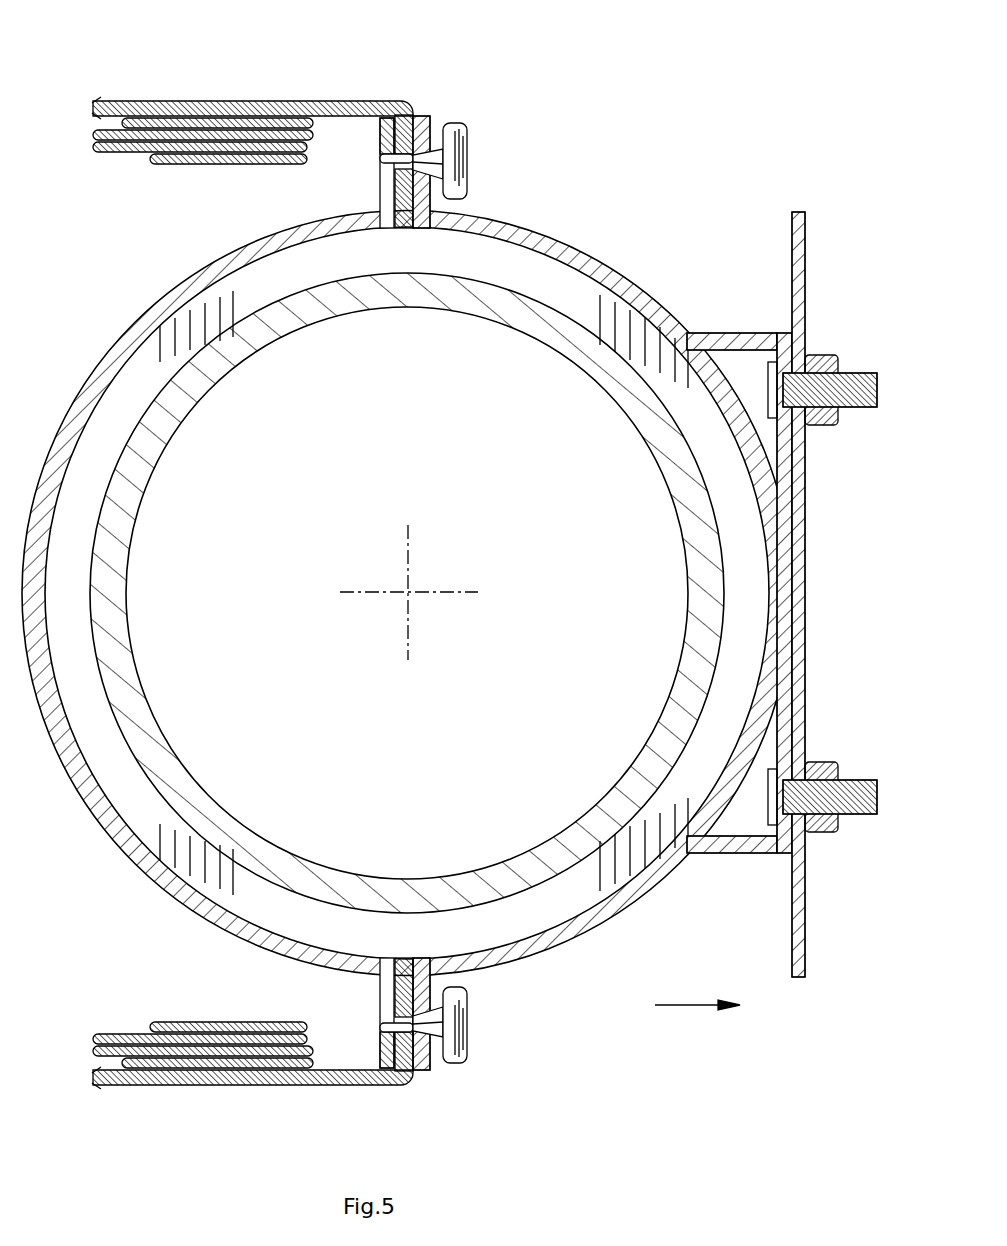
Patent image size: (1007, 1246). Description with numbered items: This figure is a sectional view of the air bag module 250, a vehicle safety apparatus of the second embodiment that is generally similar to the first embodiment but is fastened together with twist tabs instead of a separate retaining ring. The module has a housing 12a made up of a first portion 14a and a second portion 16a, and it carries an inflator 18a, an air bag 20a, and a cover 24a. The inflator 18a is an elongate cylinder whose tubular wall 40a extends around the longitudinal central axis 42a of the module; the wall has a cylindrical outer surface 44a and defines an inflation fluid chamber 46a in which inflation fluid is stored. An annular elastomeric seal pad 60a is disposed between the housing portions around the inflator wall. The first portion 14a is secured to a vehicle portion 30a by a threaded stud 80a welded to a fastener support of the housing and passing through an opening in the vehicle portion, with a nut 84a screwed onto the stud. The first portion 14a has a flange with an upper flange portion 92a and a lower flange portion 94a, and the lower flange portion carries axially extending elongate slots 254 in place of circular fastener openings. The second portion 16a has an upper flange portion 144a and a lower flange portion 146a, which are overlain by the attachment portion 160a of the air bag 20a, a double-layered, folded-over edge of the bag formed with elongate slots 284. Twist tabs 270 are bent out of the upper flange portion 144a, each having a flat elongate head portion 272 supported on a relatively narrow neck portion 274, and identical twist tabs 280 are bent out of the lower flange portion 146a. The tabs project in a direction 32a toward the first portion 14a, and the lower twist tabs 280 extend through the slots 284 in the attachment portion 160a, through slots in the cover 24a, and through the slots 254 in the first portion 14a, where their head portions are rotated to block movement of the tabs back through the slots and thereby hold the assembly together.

The housing 12a is at (719, 239).
The first portion of the housing 14a is at (596, 242).
The second portion of the housing 16a is at (122, 322).
The inflator 18a is at (112, 728).
The air bag 20a is at (199, 1000).
The cover 24a is at (330, 1087).
The vehicle portion 30a is at (806, 266).
The direction 32a is at (690, 1007).
The tubular wall 40a is at (133, 675).
The longitudinal central axis 42a is at (431, 611).
The cylindrical outer surface 44a is at (167, 790).
The inflation fluid chamber 46a is at (304, 758).
The second annular elastomeric seal pad 60a is at (82, 473).
The threaded stud 80a is at (861, 373).
The nut 84a is at (830, 424).
The upper flange portion 92a is at (430, 118).
The lower flange portion 94a is at (431, 1072).
The upper flange portion 144a is at (380, 200).
The lower flange portion 146a is at (380, 1060).
The attachment portion 160a is at (407, 983).
The air bag module 250 is at (673, 157).
The elongate slots 254 is at (470, 1024).
The twist tabs 270 is at (474, 158).
The head portion 272 is at (462, 146).
The neck portion 274 is at (444, 148).
The twist tabs 280 is at (474, 1044).
The slots 284 is at (411, 1080).